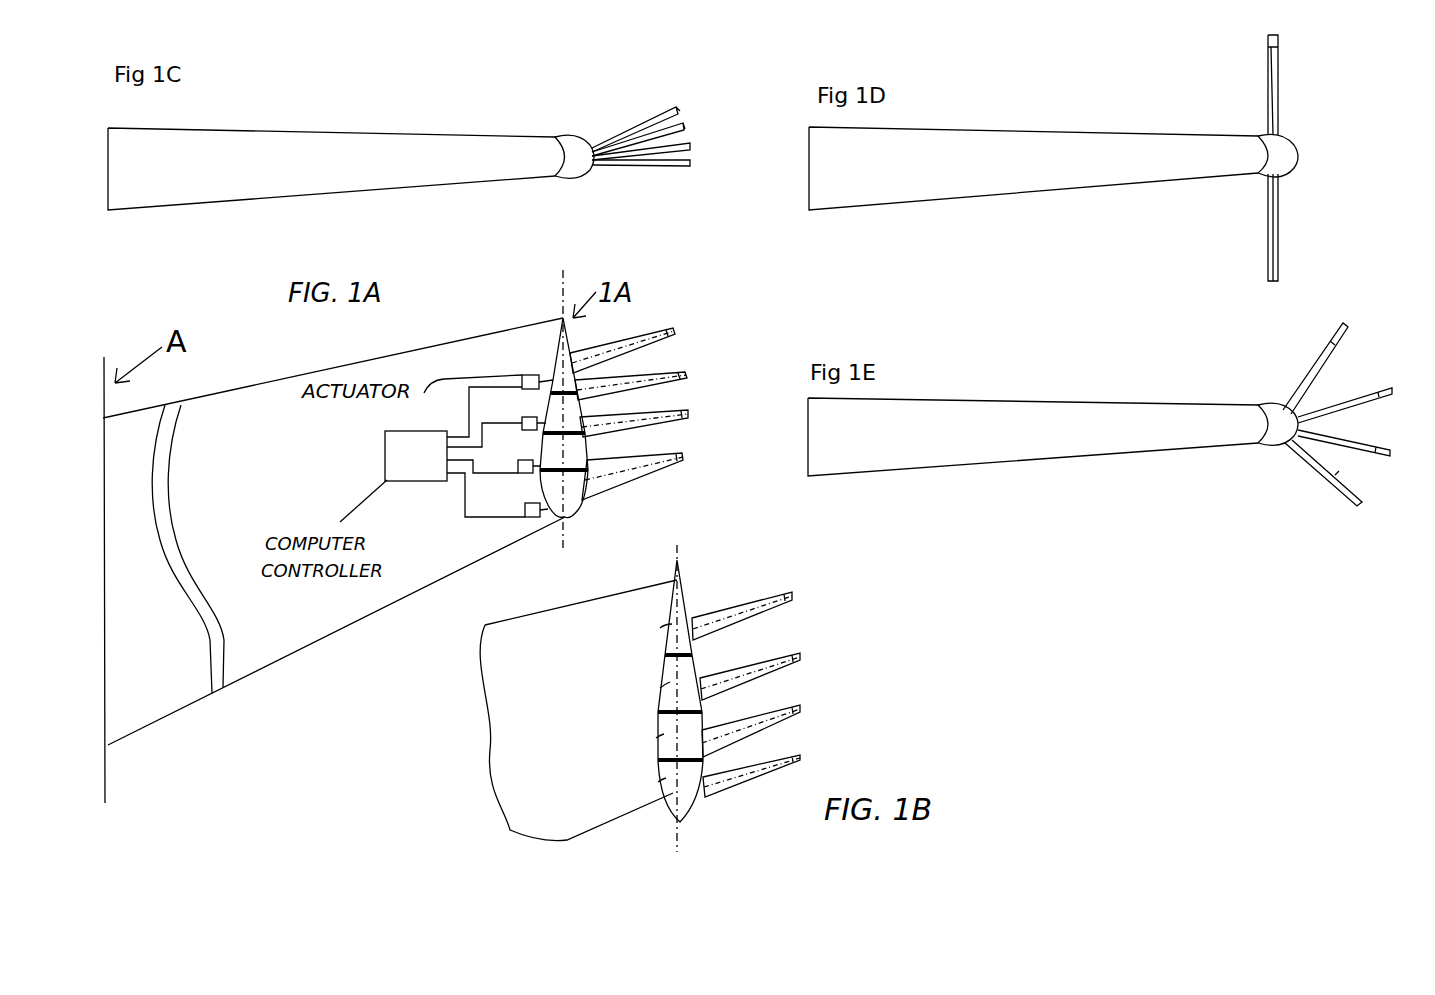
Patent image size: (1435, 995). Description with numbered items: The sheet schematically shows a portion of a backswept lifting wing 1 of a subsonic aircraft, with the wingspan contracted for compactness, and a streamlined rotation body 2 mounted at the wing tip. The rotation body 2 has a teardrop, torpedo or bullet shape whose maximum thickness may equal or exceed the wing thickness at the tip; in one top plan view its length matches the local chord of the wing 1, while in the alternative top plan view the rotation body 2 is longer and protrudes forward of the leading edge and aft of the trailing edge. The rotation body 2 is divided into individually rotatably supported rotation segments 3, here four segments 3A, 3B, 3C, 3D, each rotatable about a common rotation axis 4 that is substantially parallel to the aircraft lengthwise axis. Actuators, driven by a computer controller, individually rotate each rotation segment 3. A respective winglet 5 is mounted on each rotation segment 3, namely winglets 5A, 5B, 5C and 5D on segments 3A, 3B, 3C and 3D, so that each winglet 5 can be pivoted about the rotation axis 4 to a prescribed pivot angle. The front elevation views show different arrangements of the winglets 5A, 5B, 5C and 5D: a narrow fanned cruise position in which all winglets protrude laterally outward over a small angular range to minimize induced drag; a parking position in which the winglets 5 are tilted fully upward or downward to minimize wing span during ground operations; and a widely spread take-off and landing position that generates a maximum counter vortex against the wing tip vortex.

In FIG. 1A, the wing 1 is at (283, 415).
In FIG. 1B, the wing 1 is at (538, 657).
In FIG. 1C, the wing 1 is at (235, 175).
In FIG. 1A, the rotation body 2 is at (563, 318).
In FIG. 1B, the rotation body 2 is at (676, 585).
In FIG. 1C, the rotation body 2 is at (580, 140).
In FIG. 1D, the rotation body 2 is at (1280, 148).
In FIG. 1E, the rotation body 2 is at (1280, 410).
In FIG. 1A, the rotation segment 3 is at (588, 520).
In FIG. 1A, the rotation segment 3A is at (544, 494).
In FIG. 1B, the rotation segment 3A is at (662, 780).
In FIG. 1A, the rotation segment 3B is at (541, 452).
In FIG. 1B, the rotation segment 3B is at (660, 736).
In FIG. 1A, the rotation segment 3C is at (547, 408).
In FIG. 1B, the rotation segment 3C is at (665, 686).
In FIG. 1A, the rotation segment 3D is at (553, 352).
In FIG. 1B, the rotation segment 3D is at (668, 628).
In FIG. 1A, the rotation axis 4 is at (561, 413).
In FIG. 1B, the rotation axis 4 is at (676, 699).
In FIG. 1A, the winglet 5 is at (657, 410).
In FIG. 1A, the winglet 5A is at (683, 457).
In FIG. 1B, the winglet 5A is at (801, 758).
In FIG. 1C, the winglet 5A is at (610, 163).
In FIG. 1D, the winglet 5A is at (1278, 207).
In FIG. 1E, the winglet 5A is at (1338, 485).
In FIG. 1A, the winglet 5B is at (688, 414).
In FIG. 1B, the winglet 5B is at (801, 709).
In FIG. 1C, the winglet 5B is at (628, 153).
In FIG. 1D, the winglet 5B is at (1278, 260).
In FIG. 1E, the winglet 5B is at (1348, 445).
In FIG. 1A, the winglet 5C is at (687, 375).
In FIG. 1B, the winglet 5C is at (801, 657).
In FIG. 1C, the winglet 5C is at (660, 135).
In FIG. 1D, the winglet 5C is at (1278, 104).
In FIG. 1E, the winglet 5C is at (1352, 402).
In FIG. 1A, the winglet 5D is at (675, 331).
In FIG. 1B, the winglet 5D is at (793, 596).
In FIG. 1C, the winglet 5D is at (682, 120).
In FIG. 1D, the winglet 5D is at (1278, 52).
In FIG. 1E, the winglet 5D is at (1332, 348).